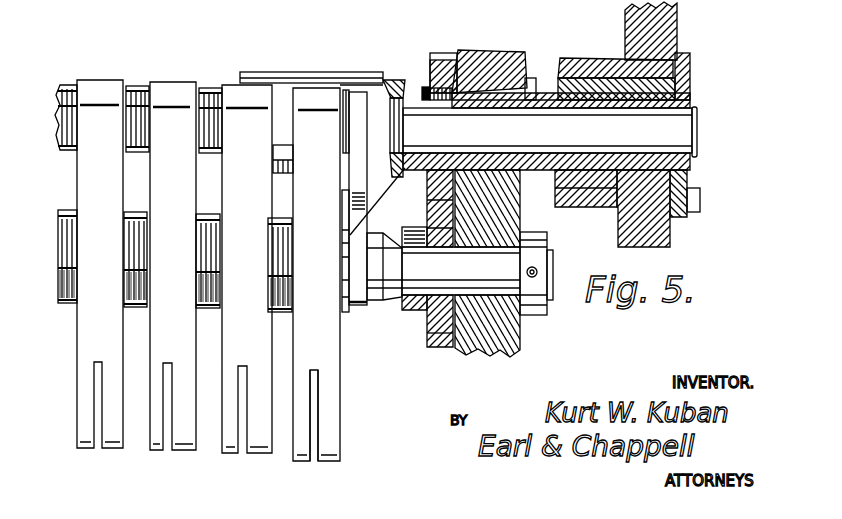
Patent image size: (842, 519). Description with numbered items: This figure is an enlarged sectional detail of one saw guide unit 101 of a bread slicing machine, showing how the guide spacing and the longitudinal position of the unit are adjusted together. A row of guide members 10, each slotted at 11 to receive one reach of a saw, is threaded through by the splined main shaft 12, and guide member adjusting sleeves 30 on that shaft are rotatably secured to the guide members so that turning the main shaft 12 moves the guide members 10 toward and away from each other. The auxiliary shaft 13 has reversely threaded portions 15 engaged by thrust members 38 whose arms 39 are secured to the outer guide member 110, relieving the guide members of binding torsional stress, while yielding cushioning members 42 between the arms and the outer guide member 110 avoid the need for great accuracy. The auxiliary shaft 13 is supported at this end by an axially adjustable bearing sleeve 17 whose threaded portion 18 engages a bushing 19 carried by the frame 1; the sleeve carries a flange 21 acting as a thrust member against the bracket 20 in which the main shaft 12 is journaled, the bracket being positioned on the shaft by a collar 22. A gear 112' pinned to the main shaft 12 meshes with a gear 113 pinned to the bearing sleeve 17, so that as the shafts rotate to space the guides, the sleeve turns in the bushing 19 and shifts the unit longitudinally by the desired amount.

The frame 1 is at (677, 25).
The guide member 10 is at (80, 334).
The slot 11 is at (315, 407).
The main shaft 12 is at (382, 298).
The auxiliary shaft 13 is at (212, 88).
The reversely threaded portions 15 is at (139, 86).
The bearing sleeve 17 is at (572, 172).
The threaded portion 18 is at (582, 83).
The bushing 19 is at (690, 80).
The bracket 20 is at (482, 62).
The flange 21 is at (538, 78).
The collar 22 is at (537, 310).
The guide member adjusting sleeve 30 is at (194, 287).
The thrust member 38 is at (363, 88).
The arm 39 is at (366, 203).
The cushioning member 42 is at (346, 300).
The saw guide unit 101 is at (315, 86).
The outer guide member 110 is at (322, 352).
The gear 112' is at (441, 283).
The gear 113 is at (440, 62).